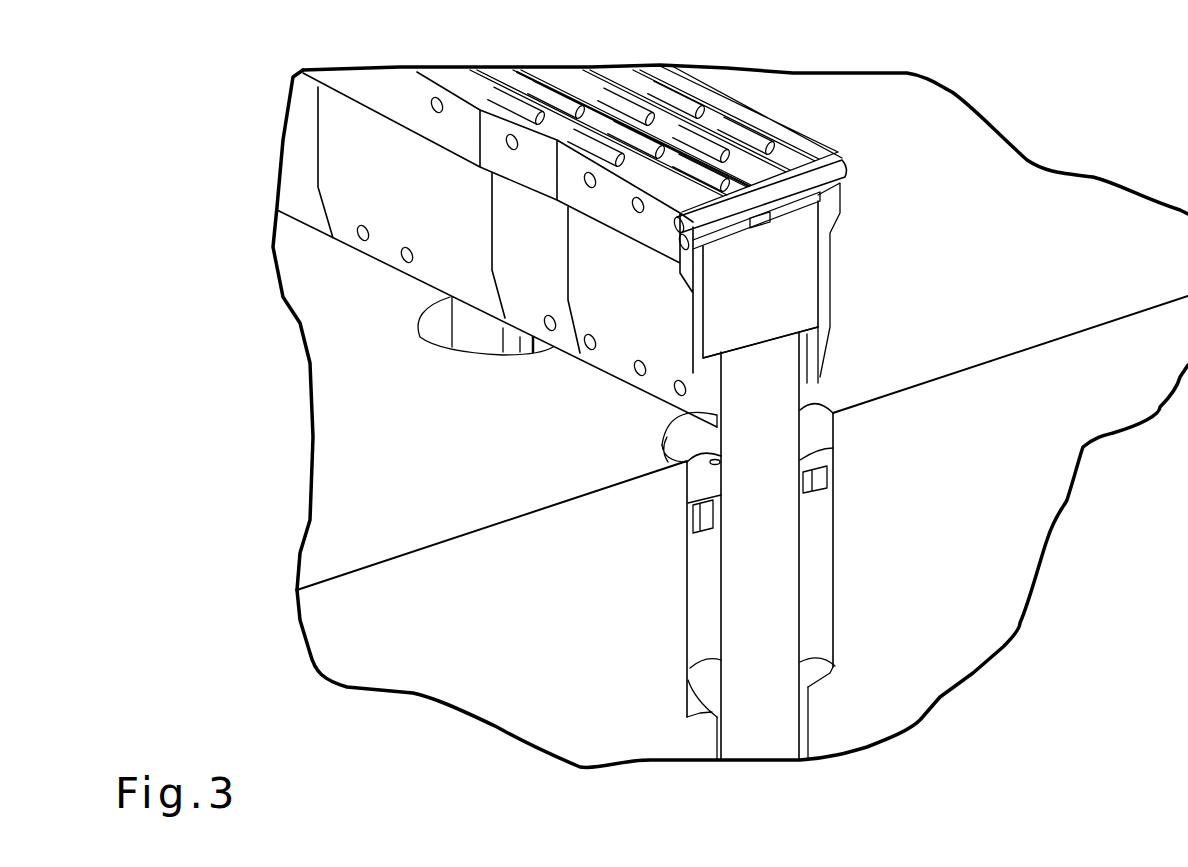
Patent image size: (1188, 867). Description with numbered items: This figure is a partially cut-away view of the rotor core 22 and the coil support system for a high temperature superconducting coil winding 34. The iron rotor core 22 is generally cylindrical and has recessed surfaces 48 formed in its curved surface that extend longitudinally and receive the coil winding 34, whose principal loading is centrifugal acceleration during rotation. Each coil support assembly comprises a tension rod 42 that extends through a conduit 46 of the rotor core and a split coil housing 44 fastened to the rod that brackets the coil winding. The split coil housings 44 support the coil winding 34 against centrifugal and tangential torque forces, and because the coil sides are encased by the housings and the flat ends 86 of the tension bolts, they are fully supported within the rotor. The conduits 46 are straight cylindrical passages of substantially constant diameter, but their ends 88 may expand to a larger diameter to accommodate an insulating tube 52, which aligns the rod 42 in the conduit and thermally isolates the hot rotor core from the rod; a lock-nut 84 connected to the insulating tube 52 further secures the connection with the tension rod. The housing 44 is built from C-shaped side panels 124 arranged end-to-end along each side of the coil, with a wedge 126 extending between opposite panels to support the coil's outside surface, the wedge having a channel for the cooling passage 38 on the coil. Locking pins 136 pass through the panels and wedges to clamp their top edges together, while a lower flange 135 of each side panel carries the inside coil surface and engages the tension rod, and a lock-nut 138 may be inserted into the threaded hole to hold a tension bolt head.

The rotor core 22 is at (1046, 500).
The coil winding 34 is at (776, 310).
The cooling passage 38 is at (757, 230).
The tension rod 42 is at (764, 718).
The split coil housing 44 is at (838, 268).
The conduit 46 is at (813, 723).
The recessed surface 48 is at (1090, 240).
The insulating tube 52 is at (818, 515).
The lock-nut 84 is at (836, 462).
The flat end 86 is at (755, 341).
The conduit end 88 is at (835, 553).
The side panel 124 is at (833, 210).
The wedge 126 is at (735, 150).
The lower flange 135 is at (668, 378).
The locking pin 136 is at (716, 137).
The lock-nut 138 is at (667, 445).